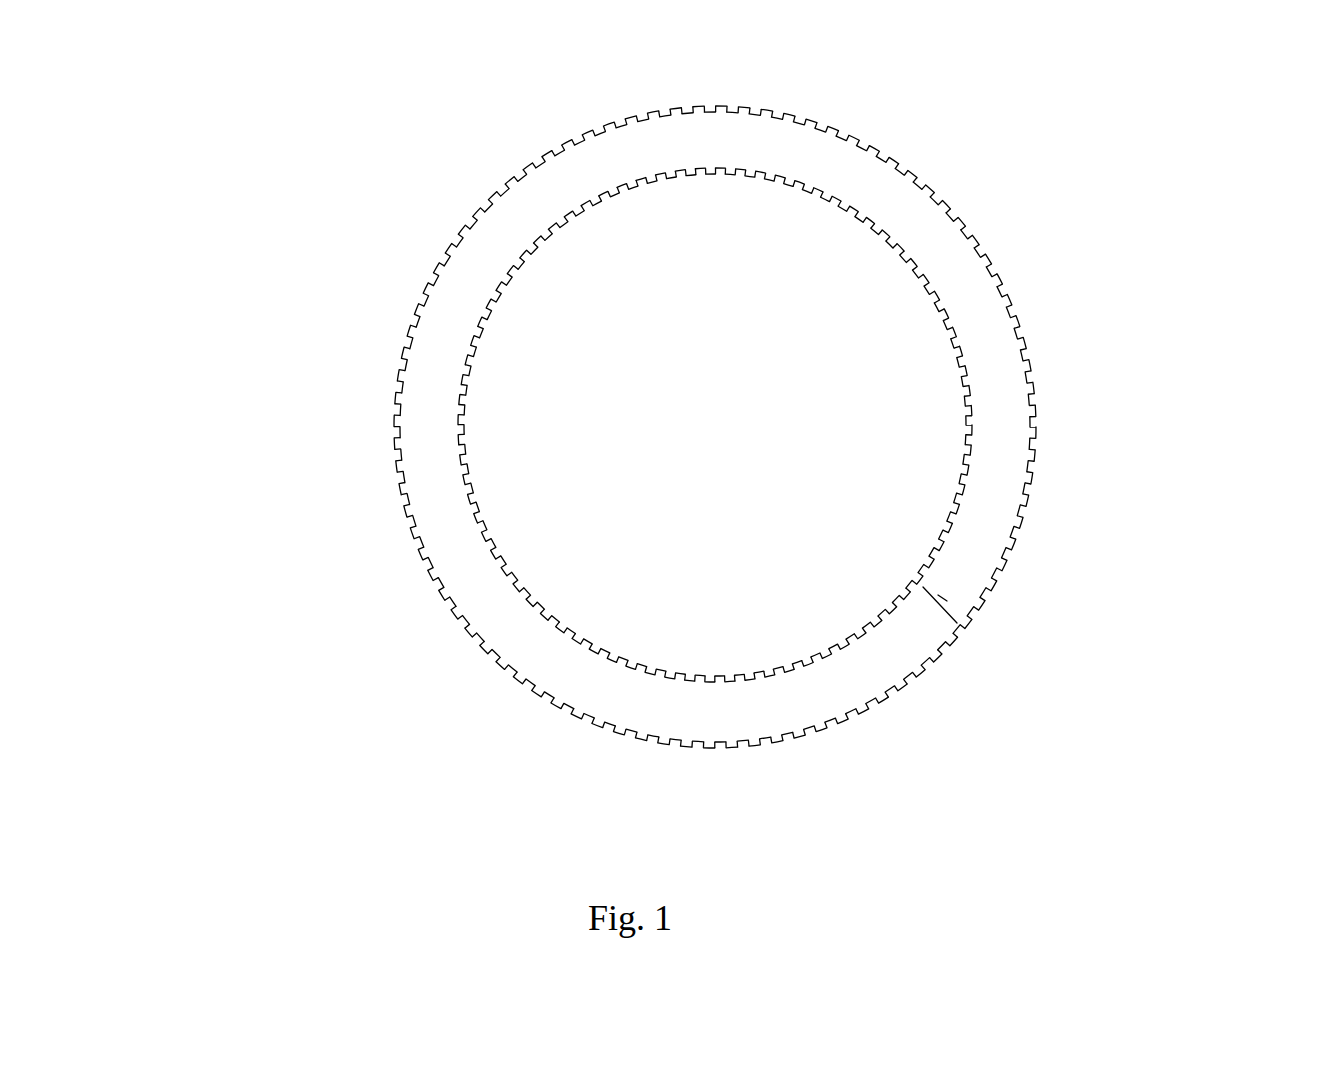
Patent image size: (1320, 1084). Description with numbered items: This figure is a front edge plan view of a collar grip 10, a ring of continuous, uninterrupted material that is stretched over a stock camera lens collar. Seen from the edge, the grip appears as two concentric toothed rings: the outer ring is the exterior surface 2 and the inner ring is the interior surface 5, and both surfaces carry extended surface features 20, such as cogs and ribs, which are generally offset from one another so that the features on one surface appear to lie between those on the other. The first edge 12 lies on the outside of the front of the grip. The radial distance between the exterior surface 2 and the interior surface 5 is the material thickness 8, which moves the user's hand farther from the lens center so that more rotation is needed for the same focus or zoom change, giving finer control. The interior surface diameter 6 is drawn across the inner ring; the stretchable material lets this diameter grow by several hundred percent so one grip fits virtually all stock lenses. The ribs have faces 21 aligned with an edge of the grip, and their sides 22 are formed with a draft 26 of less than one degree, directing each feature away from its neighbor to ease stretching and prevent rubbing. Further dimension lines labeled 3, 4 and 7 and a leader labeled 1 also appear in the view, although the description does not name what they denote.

The ring device 1 is at (640, 698).
The exterior surface 2 is at (400, 485).
The outer ring diameter 3 is at (563, 156).
The outer ring diameter 4 is at (835, 134).
The interior surface 5 is at (488, 313).
The interior surface diameter 6 is at (721, 682).
The inner ring diameter 7 is at (525, 588).
The material thickness 8 is at (913, 589).
The collar grip 10 is at (403, 190).
The first edge 12 is at (523, 212).
The extended surface features 20 is at (528, 236).
The faces 21 is at (960, 484).
The sides 22 is at (1036, 363).
The draft 26 is at (943, 193).